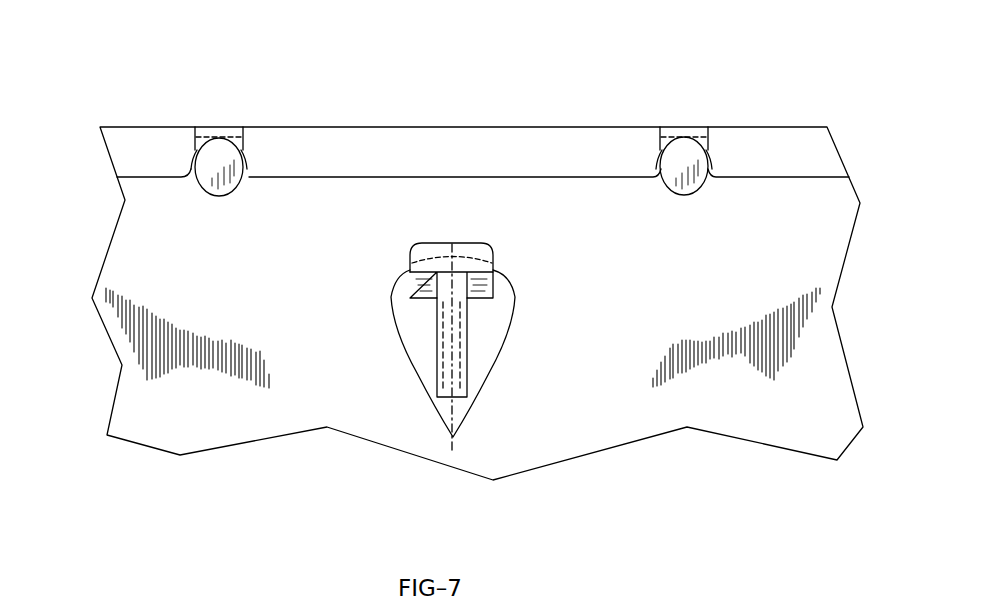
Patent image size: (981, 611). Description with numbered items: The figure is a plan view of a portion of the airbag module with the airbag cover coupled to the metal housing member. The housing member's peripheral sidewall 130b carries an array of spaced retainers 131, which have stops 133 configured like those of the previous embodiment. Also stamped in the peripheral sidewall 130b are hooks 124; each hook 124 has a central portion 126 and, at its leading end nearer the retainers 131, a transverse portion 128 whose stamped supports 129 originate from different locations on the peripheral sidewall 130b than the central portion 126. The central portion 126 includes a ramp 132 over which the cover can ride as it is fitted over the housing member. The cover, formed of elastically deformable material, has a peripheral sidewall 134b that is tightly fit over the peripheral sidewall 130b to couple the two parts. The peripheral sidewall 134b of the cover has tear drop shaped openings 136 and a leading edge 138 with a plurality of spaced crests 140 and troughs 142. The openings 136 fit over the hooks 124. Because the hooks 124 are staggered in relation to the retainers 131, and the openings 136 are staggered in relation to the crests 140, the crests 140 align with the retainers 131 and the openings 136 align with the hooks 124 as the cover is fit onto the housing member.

The peripheral sidewall 130b is at (367, 143).
The troughs 142 is at (430, 177).
The leading edge 138 is at (493, 175).
The stops 133 is at (232, 132).
The crests 140 is at (195, 150).
The retainers 131 is at (243, 165).
The peripheral sidewall 134b is at (192, 263).
The transverse portion 128 is at (431, 252).
The stamped supports 129 is at (487, 290).
The hooks 124 is at (448, 347).
The central portion 126 is at (447, 360).
The ramp 132 is at (457, 383).
The tear drop shaped openings 136 is at (483, 408).